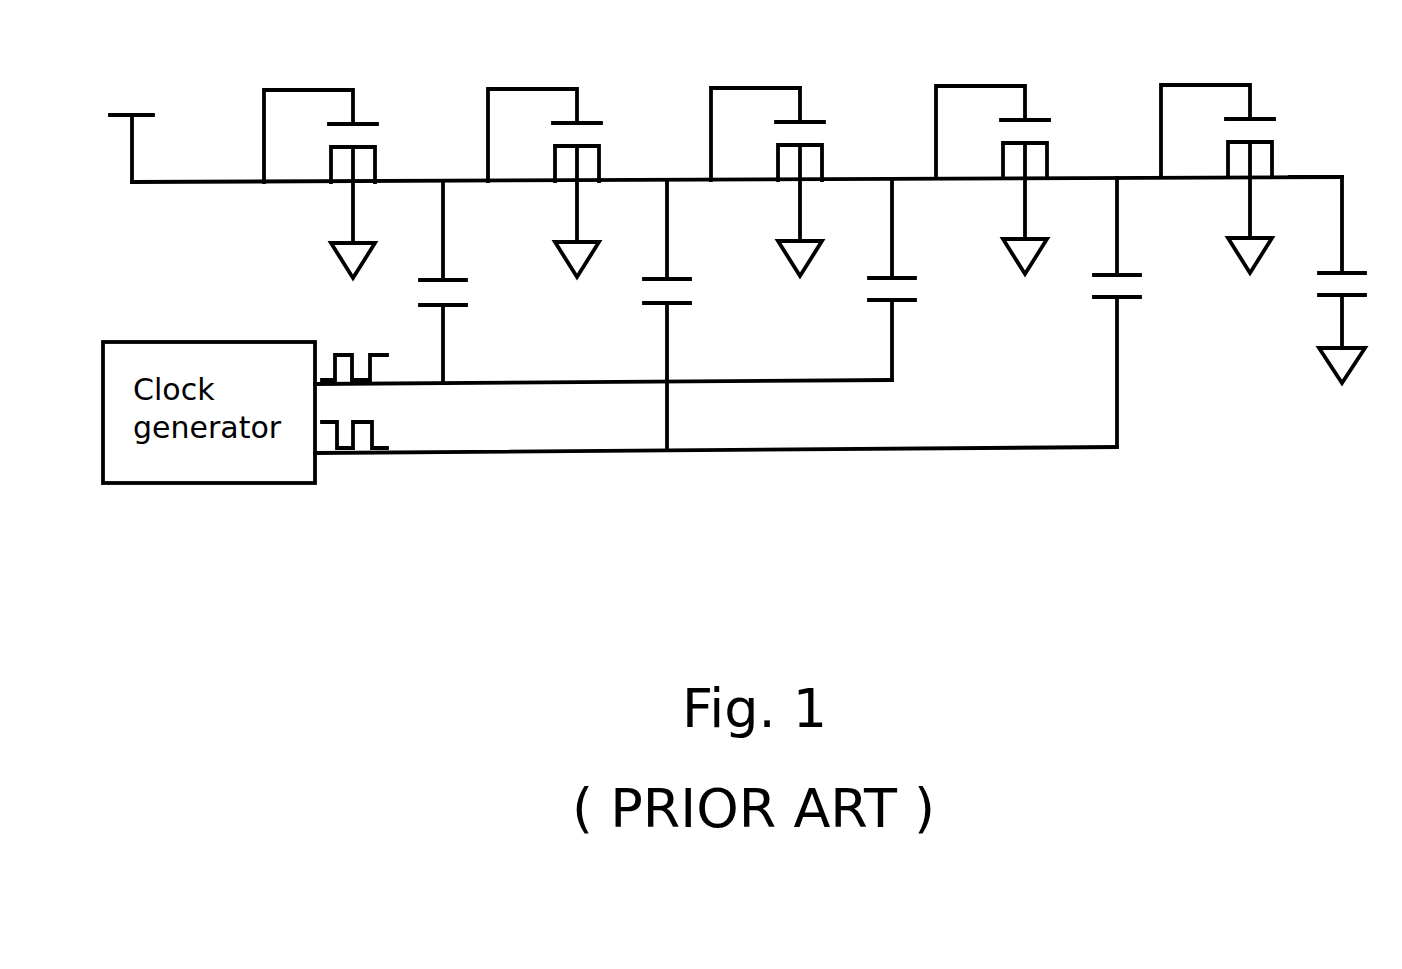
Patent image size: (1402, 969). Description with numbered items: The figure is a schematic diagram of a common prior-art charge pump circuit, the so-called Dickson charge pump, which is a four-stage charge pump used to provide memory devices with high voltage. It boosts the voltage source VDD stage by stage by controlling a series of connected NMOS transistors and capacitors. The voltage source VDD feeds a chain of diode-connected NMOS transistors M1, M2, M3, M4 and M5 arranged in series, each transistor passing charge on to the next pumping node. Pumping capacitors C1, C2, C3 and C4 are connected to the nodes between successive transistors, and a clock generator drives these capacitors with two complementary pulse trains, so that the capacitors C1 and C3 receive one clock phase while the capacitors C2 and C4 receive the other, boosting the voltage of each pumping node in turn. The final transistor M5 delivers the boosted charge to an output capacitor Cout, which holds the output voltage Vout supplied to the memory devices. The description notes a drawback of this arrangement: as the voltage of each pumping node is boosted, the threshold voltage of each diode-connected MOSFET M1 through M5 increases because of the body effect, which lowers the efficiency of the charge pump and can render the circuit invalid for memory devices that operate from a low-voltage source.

The voltage source VDD is at (126, 132).
The NMOS transistor M1 is at (321, 158).
The NMOS transistor M2 is at (544, 158).
The NMOS transistor M3 is at (767, 157).
The NMOS transistor M4 is at (992, 154).
The NMOS transistor M5 is at (1217, 152).
The capacitor C1 is at (419, 282).
The capacitor C2 is at (641, 315).
The capacitor C3 is at (865, 279).
The capacitor C4 is at (1088, 312).
The output capacitor Cout is at (1292, 280).
The output voltage Vout is at (1336, 144).